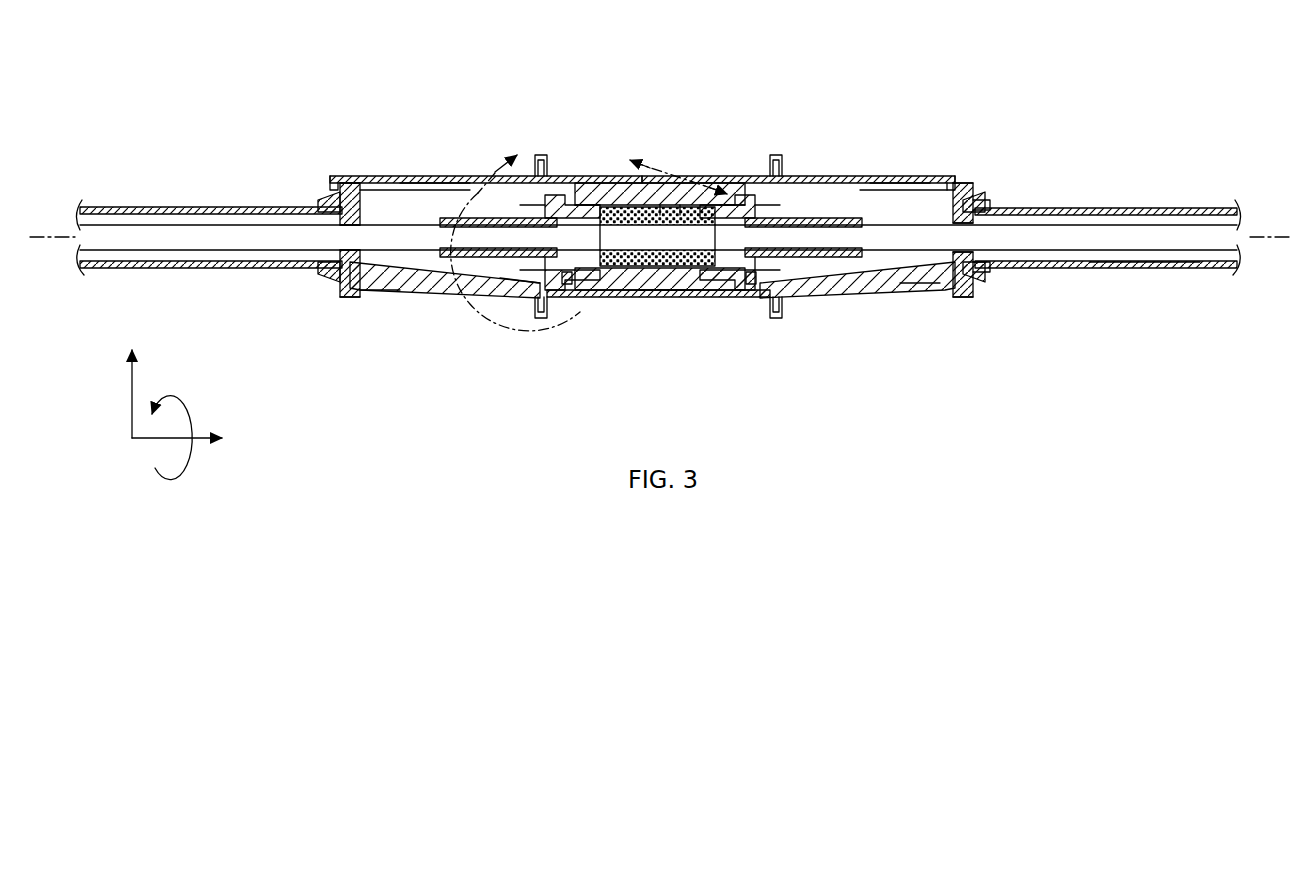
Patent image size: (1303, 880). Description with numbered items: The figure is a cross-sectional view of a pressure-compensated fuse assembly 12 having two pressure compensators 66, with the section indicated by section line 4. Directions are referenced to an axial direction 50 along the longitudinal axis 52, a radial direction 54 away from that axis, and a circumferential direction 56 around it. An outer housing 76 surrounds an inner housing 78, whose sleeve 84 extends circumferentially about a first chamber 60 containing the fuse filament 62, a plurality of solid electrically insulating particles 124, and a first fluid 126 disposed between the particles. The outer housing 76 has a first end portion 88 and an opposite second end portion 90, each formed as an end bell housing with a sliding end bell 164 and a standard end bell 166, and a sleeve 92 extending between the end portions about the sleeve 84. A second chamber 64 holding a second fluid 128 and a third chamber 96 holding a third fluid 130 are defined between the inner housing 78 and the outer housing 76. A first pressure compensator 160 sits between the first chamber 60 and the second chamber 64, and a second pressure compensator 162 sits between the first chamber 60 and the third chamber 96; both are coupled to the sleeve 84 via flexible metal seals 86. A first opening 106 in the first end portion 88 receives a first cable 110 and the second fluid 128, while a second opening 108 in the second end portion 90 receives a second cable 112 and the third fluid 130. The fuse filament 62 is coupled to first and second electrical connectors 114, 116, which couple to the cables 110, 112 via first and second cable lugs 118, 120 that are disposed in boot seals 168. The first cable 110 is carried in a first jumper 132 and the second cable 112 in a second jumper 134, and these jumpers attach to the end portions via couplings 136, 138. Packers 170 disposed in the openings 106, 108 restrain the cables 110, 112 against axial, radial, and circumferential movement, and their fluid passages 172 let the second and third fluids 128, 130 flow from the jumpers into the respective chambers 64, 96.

The section line 4- 4 is at (589, 227).
The pressure-compensated fuse assembly 12 is at (392, 42).
The axial direction 50 is at (148, 440).
The longitudinal axis 52 is at (1286, 237).
The radial direction 54 is at (132, 398).
The circumferential direction 56 is at (190, 414).
The first chamber 60 is at (670, 292).
The fuse filament 62 is at (682, 218).
The second chamber 64 is at (432, 284).
The pressure compensator 66 is at (720, 358).
The outer housing 76 is at (945, 163).
The inner housing 78 is at (715, 198).
The sleeve 84 is at (615, 292).
The seals 86 is at (544, 176).
The first end portion 88 is at (520, 176).
The second end portion 90 is at (866, 176).
The sleeve 92 is at (706, 298).
The third chamber 96 is at (805, 300).
The first opening 106 is at (345, 282).
The second opening 108 is at (975, 282).
The first cable 110 is at (205, 233).
The second cable 112 is at (1168, 236).
The first electrical connector 114 is at (553, 292).
The second electrical connector 116 is at (752, 300).
The first cable lug 118 is at (510, 270).
The second cable lug 120 is at (808, 203).
The solid electrically insulating particles 124 is at (590, 203).
The first fluid 126 is at (678, 212).
The second fluid 128 is at (257, 210).
The third fluid 130 is at (1092, 264).
The first jumper 132 is at (146, 208).
The second jumper 134 is at (1103, 208).
The coupling 136 is at (332, 190).
The coupling 138 is at (997, 200).
The first pressure compensator 160 is at (605, 345).
The second pressure compensator 162 is at (812, 358).
The sliding end bell 164 is at (436, 176).
The standard end bell 166 is at (413, 285).
The boot seals 168 is at (507, 223).
The packers 170 is at (356, 200).
The fluid passages 172 is at (335, 260).